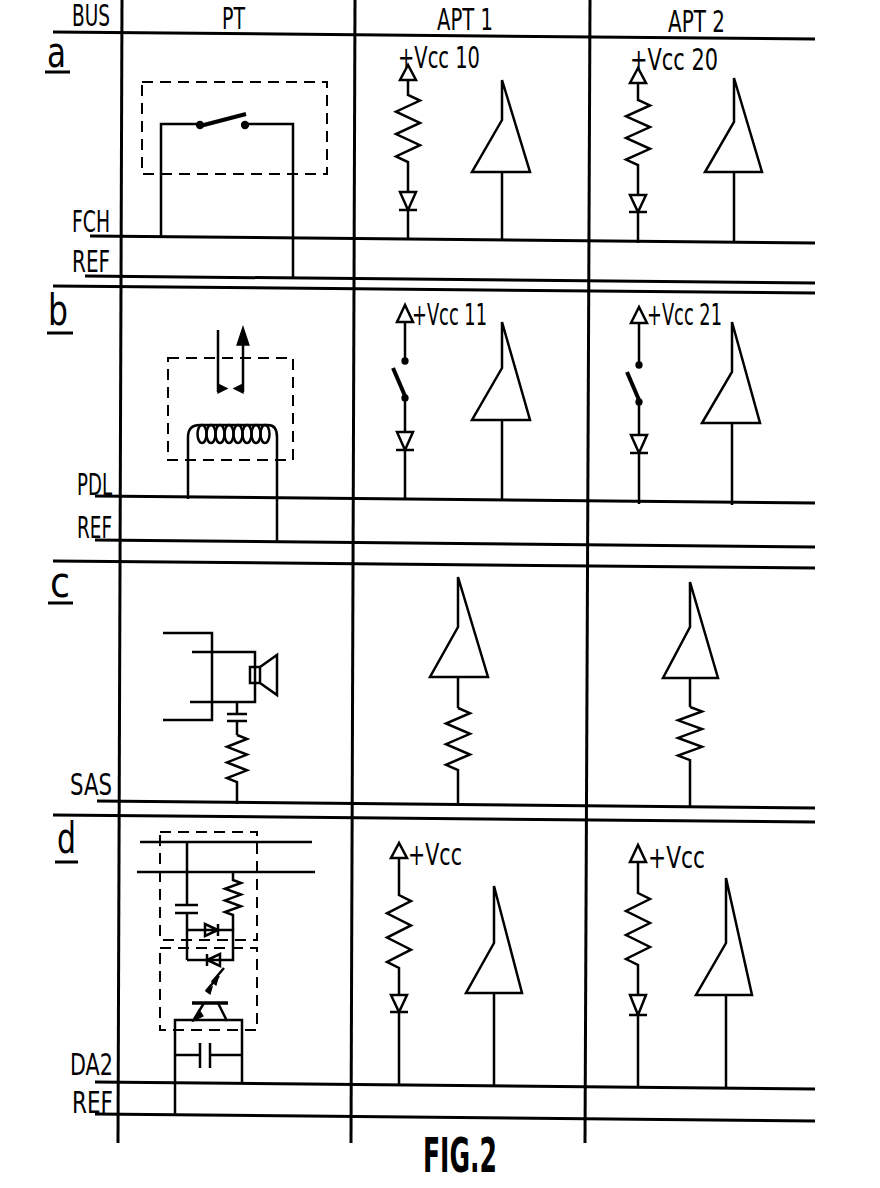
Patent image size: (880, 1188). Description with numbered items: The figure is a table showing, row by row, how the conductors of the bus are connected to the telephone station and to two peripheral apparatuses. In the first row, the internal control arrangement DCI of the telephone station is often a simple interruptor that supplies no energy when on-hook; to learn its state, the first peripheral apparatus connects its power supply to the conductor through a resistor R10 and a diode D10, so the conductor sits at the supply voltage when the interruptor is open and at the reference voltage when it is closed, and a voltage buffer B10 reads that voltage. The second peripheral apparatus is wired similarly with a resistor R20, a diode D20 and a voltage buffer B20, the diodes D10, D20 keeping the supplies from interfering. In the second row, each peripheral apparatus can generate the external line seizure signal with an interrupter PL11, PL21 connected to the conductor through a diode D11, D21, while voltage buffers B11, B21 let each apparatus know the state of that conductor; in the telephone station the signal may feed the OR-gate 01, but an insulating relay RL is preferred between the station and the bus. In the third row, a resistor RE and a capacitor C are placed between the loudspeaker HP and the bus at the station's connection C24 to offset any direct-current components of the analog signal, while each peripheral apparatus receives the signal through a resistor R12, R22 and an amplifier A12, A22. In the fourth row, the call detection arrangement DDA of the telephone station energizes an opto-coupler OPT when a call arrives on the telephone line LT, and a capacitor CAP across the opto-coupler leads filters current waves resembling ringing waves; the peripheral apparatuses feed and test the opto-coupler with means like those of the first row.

The internal control arrangement DCI is at (308, 83).
The resistor R10 is at (416, 127).
The diode D10 is at (417, 201).
The voltage buffer B10 is at (514, 158).
The resistor R20 is at (646, 132).
The diode D20 is at (647, 206).
The voltage buffer B20 is at (744, 160).
The OR-gate 01 is at (233, 348).
The relay RL is at (285, 389).
The interrupter PL11 is at (432, 389).
The diode D11 is at (414, 442).
The voltage buffer B11 is at (511, 406).
The interrupter PL21 is at (666, 393).
The diode D21 is at (647, 446).
The voltage buffer B21 is at (740, 406).
The connector C24 is at (196, 643).
The loudspeaker HP is at (278, 674).
The capacitor C is at (250, 718).
The resistor RE is at (262, 763).
The amplifier A12 is at (466, 652).
The resistor R12 is at (465, 735).
The amplifier A22 is at (698, 655).
The resistor R22 is at (697, 740).
The telephone line LT is at (293, 855).
The call detection arrangement DDA is at (255, 895).
The opto-coupler OPT is at (285, 990).
The capacitor CAP is at (218, 1063).